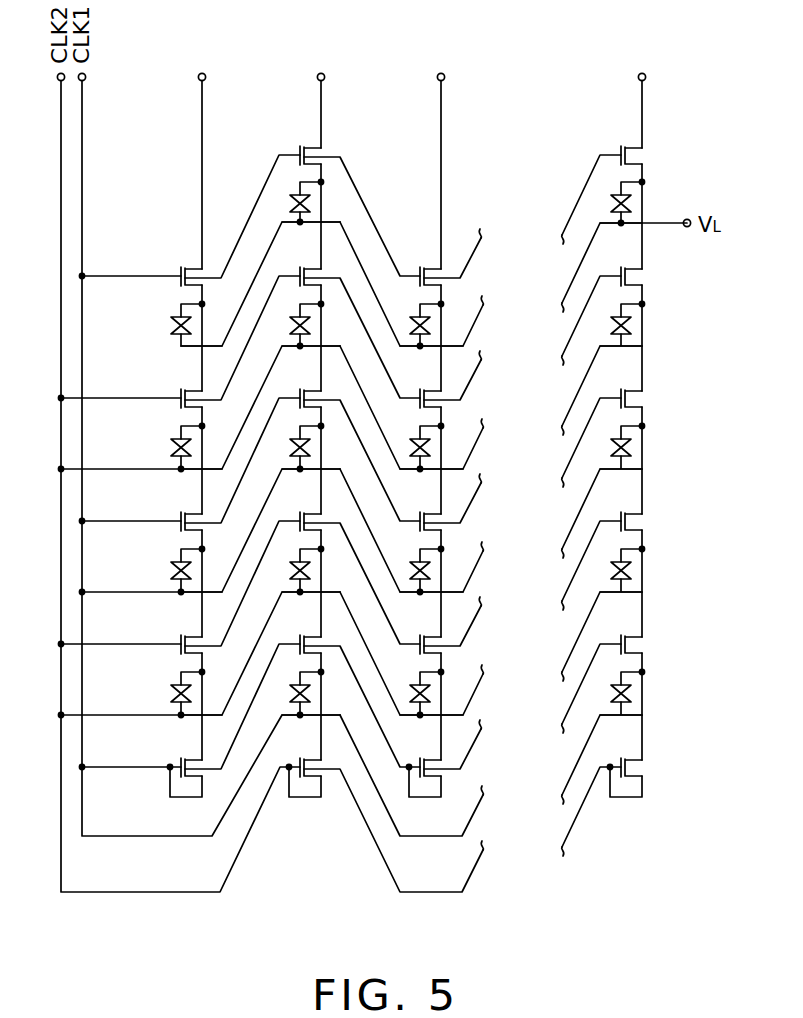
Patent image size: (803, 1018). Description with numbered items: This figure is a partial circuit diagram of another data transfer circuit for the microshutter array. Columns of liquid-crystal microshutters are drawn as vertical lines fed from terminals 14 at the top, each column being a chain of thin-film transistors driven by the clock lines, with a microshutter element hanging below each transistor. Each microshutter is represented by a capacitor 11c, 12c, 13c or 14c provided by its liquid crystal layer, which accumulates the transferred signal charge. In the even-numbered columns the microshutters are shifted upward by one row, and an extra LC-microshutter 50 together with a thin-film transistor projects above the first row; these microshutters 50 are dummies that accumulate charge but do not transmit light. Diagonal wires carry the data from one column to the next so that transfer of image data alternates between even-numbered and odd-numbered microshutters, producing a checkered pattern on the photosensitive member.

The signal line terminal 14 is at (412, 416).
The LC-microshutter 50 is at (452, 203).
The capacitor 11c is at (389, 318).
The capacitor 12c is at (386, 442).
The capacitor 13c is at (386, 566).
The capacitor 14c is at (386, 689).